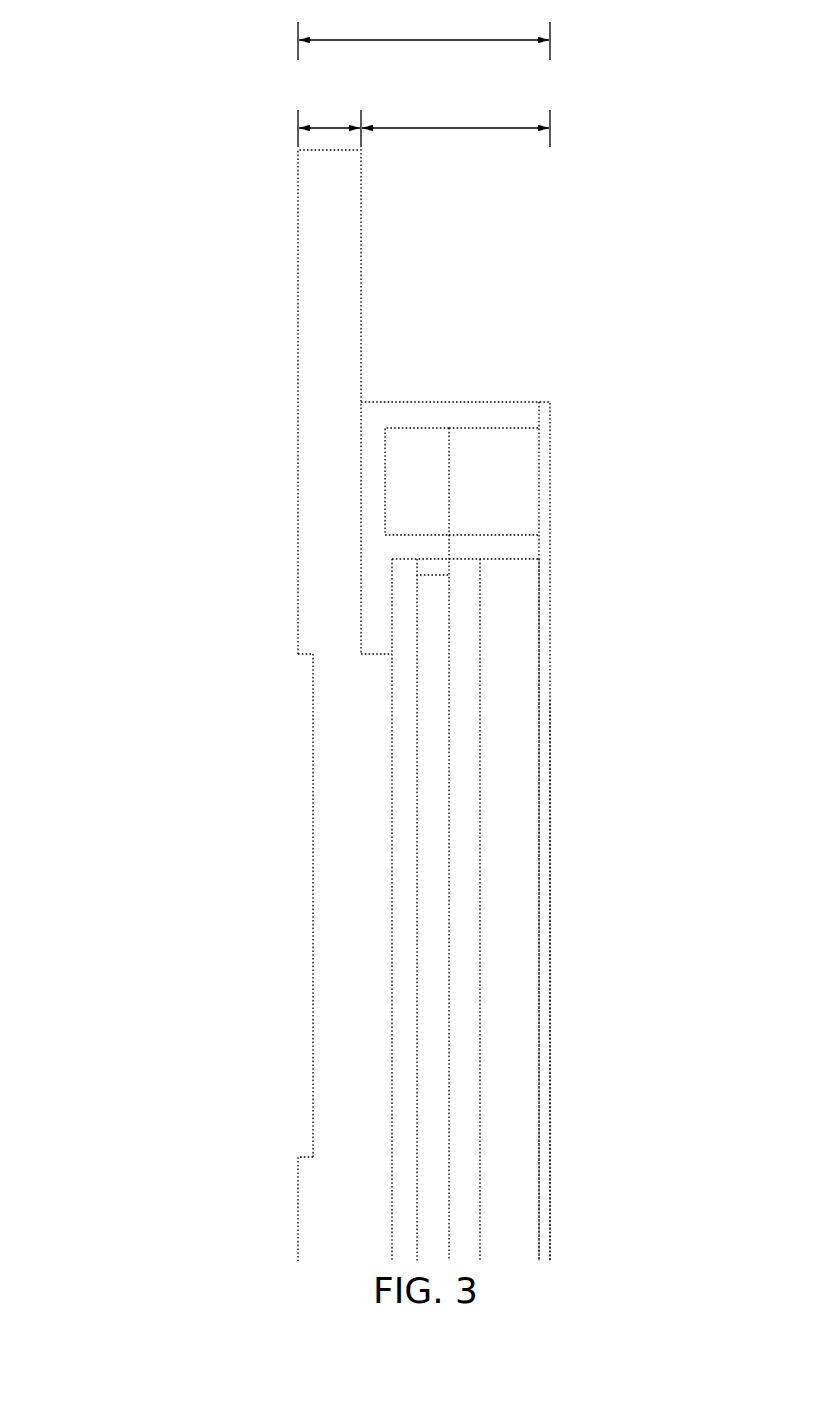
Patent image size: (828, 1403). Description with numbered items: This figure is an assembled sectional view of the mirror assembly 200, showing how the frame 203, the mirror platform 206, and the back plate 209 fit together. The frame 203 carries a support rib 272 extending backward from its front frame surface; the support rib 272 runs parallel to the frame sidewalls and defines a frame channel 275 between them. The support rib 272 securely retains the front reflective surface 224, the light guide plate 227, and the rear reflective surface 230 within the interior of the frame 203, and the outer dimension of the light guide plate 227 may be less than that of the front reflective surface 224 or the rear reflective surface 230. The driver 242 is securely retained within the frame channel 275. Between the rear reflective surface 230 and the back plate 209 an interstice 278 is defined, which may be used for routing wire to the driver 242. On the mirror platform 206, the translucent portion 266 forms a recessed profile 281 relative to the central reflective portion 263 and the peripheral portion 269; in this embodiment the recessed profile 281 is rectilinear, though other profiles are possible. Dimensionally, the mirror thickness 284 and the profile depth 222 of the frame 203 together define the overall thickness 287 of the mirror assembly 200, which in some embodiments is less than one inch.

The mirror assembly 200 is at (98, 175).
The frame 203 is at (461, 412).
The mirror platform 206 is at (327, 285).
The back plate 209 is at (543, 798).
The profile depth 222 is at (462, 128).
The front reflective surface 224 is at (402, 627).
The light guide plate 227 is at (423, 611).
The rear reflective surface 230 is at (470, 608).
The driver 242 is at (430, 445).
The central reflective portion 263 is at (297, 1217).
The translucent portion 266 is at (308, 913).
The peripheral portion 269 is at (297, 603).
The support rib 272 is at (490, 552).
The frame channel 275 is at (490, 466).
The interstice 278 is at (508, 702).
The recessed profile 281 is at (290, 703).
The mirror thickness 284 is at (330, 127).
The overall thickness 287 is at (432, 40).